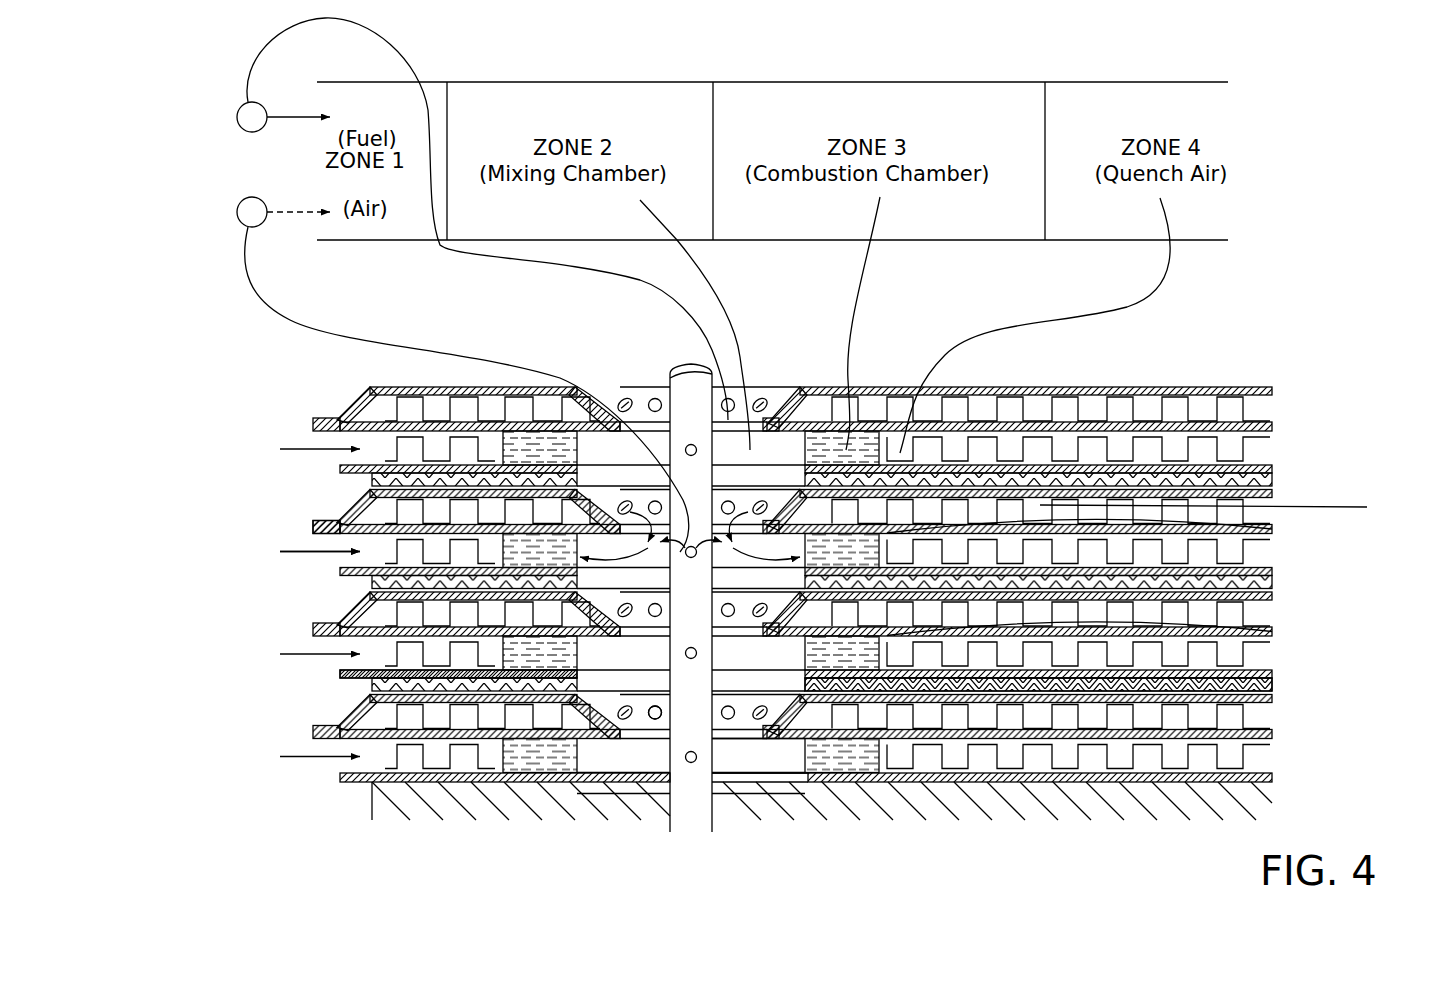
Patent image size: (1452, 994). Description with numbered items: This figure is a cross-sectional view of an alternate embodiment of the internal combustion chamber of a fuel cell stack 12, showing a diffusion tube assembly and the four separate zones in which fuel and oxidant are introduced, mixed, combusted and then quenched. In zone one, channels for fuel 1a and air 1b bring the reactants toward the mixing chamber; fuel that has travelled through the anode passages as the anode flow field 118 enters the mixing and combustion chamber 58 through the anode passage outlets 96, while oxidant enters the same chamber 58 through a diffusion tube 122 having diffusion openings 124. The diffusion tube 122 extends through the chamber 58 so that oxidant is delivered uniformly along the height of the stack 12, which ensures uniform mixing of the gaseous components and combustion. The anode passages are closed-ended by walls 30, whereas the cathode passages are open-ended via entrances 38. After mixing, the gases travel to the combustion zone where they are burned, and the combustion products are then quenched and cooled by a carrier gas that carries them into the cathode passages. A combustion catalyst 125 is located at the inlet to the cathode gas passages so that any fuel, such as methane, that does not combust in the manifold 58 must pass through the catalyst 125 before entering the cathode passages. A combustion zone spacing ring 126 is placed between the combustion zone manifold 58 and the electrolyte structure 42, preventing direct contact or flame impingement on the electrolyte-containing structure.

The fuel channel 1a is at (482, 219).
The air channel 1b is at (463, 362).
The fuel cell stack 12 is at (368, 797).
The wall 30 is at (313, 520).
The entrance 38 is at (352, 541).
The electrolyte structure 42 is at (385, 678).
The combustion chamber 58 is at (758, 758).
The orifices 96 is at (652, 720).
The anode flow field 118 is at (1302, 507).
The diffusion tube 122 is at (670, 367).
The diffusion openings 124 is at (690, 659).
The combustion catalyst 125 is at (1272, 637).
The combustion zone spacing ring 126 is at (862, 686).